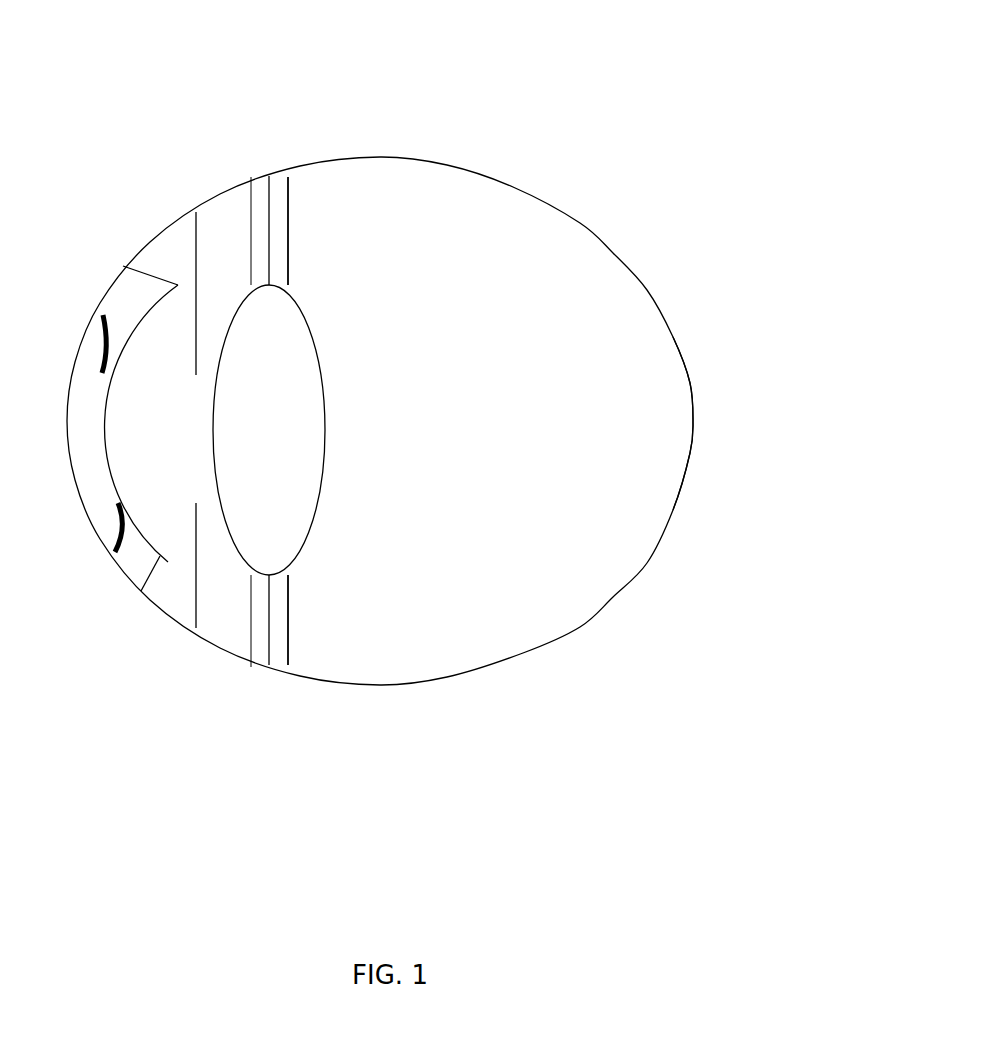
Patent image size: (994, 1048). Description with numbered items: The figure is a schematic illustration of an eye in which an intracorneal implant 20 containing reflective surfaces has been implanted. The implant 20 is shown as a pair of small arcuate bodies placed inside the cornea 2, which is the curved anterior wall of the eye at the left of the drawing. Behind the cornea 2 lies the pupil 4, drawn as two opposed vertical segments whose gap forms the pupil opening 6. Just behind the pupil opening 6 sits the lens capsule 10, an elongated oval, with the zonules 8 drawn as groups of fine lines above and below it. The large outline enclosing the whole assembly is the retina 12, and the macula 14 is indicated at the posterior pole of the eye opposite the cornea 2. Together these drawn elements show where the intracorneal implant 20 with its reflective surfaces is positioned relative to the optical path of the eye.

The cornea 2 is at (140, 579).
The pupil 4 is at (190, 253).
The pupil opening 6 is at (201, 384).
The zonules 8 is at (300, 639).
The lens capsule 10 is at (300, 511).
The retina 12 is at (610, 237).
The macula 14 is at (702, 416).
The intracorneal implant 20 is at (100, 311).